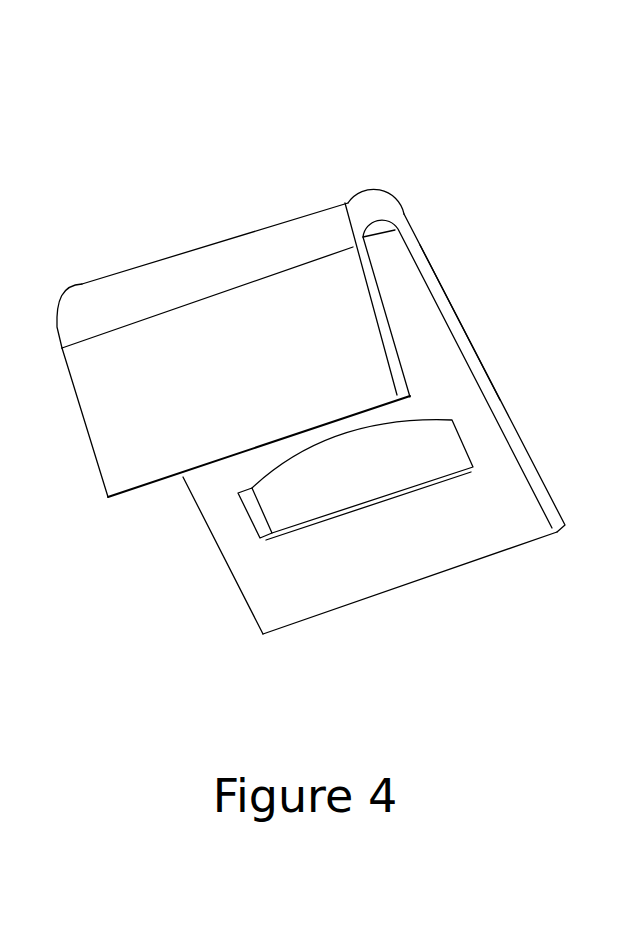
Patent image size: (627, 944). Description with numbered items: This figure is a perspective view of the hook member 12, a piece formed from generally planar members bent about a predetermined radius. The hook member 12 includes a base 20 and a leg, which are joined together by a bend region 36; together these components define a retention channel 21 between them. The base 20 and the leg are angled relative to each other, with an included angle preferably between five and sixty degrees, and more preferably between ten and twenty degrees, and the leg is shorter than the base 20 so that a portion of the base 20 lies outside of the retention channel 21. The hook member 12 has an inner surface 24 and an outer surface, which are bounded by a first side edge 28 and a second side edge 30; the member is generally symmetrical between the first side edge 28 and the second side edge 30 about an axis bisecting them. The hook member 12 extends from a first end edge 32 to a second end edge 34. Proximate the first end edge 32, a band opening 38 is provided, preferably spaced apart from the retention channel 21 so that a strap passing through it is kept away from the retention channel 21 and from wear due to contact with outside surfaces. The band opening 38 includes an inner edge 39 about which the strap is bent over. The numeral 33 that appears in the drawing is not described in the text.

The hook member 12 is at (474, 307).
The base 20 is at (480, 447).
The retention channel 21 is at (389, 277).
The inner surface 24 is at (494, 514).
The first side edge 28 is at (489, 373).
The second side edge 30 is at (206, 533).
The first end edge 32 is at (412, 587).
The flap 33 is at (116, 459).
The second end edge 34 is at (120, 495).
The bend region 36 is at (376, 186).
The band opening 38 is at (279, 504).
The inner edge 39 is at (326, 518).